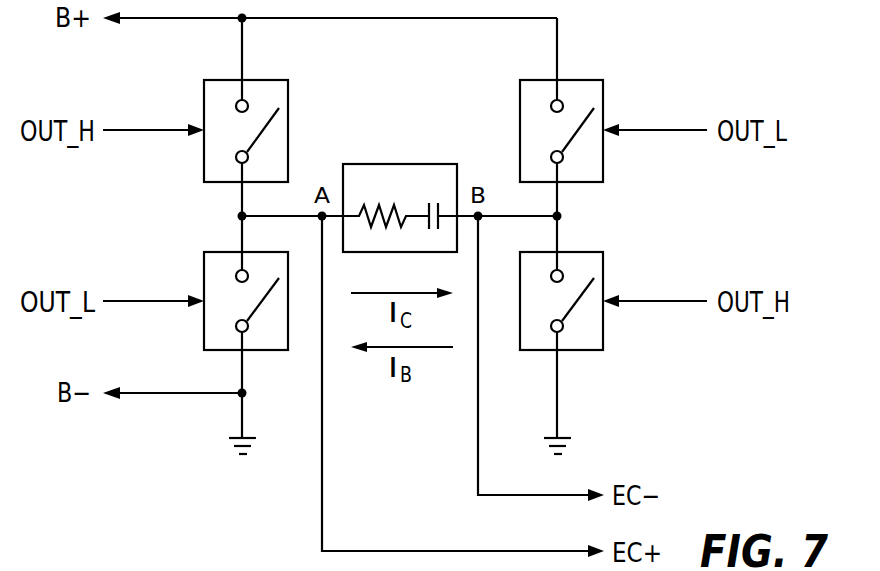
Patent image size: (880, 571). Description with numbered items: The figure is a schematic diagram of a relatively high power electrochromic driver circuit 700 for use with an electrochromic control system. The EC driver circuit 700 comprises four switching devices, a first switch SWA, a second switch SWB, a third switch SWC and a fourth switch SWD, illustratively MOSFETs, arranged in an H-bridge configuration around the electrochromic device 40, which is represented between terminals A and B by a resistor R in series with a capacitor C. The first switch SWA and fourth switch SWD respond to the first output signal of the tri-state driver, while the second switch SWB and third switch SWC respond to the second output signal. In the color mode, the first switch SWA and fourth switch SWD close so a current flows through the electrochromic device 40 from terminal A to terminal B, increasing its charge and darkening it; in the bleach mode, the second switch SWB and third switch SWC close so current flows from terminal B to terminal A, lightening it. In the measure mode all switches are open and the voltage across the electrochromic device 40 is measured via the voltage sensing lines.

The electrochromic device 40 is at (403, 190).
The EC driver circuit 700 is at (217, 506).
The first switch SWA is at (267, 80).
The second switch SWB is at (205, 268).
The third switch SWC is at (580, 80).
The fourth switch SWD is at (580, 252).
The resistor R is at (392, 197).
The capacitor C is at (433, 198).